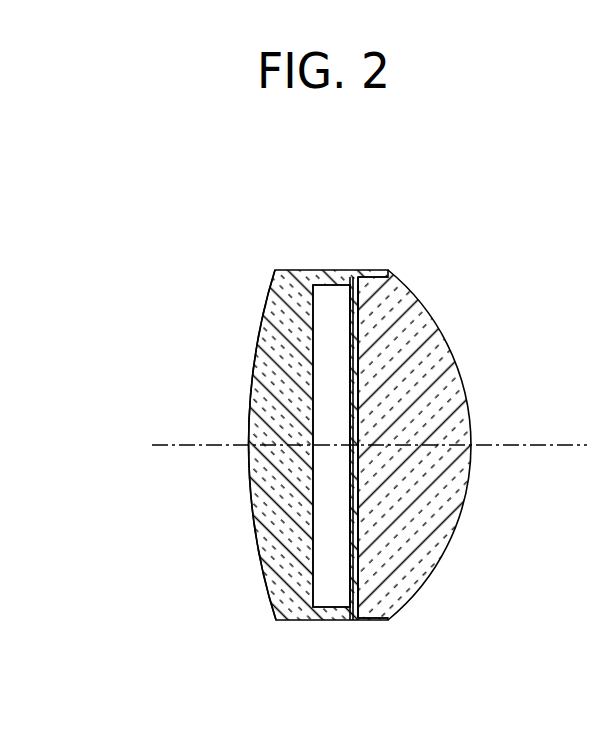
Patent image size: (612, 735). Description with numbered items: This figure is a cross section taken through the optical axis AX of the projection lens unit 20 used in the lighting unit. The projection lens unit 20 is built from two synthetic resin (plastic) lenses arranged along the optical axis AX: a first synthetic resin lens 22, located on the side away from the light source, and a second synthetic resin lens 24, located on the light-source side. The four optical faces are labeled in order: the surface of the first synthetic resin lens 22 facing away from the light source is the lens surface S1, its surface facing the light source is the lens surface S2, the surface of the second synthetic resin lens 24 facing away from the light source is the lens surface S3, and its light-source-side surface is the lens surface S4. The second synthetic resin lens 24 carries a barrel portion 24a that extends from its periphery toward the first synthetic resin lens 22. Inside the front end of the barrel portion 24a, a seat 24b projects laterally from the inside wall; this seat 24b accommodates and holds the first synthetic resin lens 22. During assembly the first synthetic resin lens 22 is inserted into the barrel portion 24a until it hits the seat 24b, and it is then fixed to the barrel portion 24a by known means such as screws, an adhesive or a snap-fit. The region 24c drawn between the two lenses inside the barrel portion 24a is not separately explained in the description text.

The projection lens unit 20 is at (427, 161).
The first synthetic resin lens 22 is at (420, 300).
The second synthetic resin lens 24 is at (263, 316).
The barrel portion 24a is at (350, 286).
The seat 24b is at (376, 276).
The recess of resin layer 24c is at (328, 292).
The lens surface S1 is at (443, 346).
The lens surface S2 is at (351, 528).
The lens surface S3 is at (333, 336).
The lens surface S4 is at (256, 356).
The optical axis AX is at (570, 445).